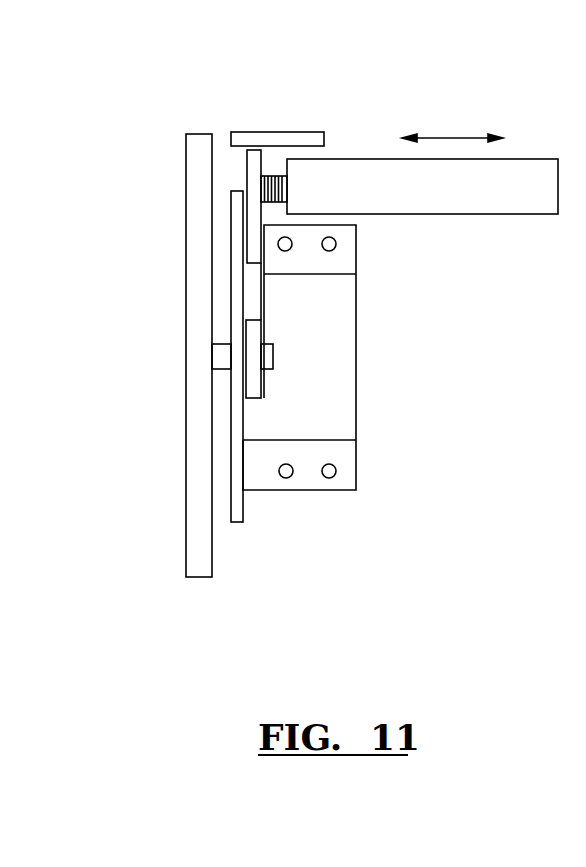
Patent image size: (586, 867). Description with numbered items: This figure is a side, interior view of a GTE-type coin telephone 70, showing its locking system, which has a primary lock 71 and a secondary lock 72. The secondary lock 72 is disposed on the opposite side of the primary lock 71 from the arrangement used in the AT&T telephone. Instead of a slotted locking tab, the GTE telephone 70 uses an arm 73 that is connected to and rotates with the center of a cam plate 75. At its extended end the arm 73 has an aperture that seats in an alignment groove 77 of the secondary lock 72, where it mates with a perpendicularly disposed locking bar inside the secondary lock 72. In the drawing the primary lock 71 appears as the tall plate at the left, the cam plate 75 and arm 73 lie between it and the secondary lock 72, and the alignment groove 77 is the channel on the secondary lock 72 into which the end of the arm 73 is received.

The GTE-type coin telephone 70 is at (360, 120).
The primary lock 71 is at (238, 546).
The secondary lock 72 is at (366, 363).
The arm 73 is at (250, 330).
The cam plate 75 is at (237, 421).
The alignment groove 77 is at (253, 291).